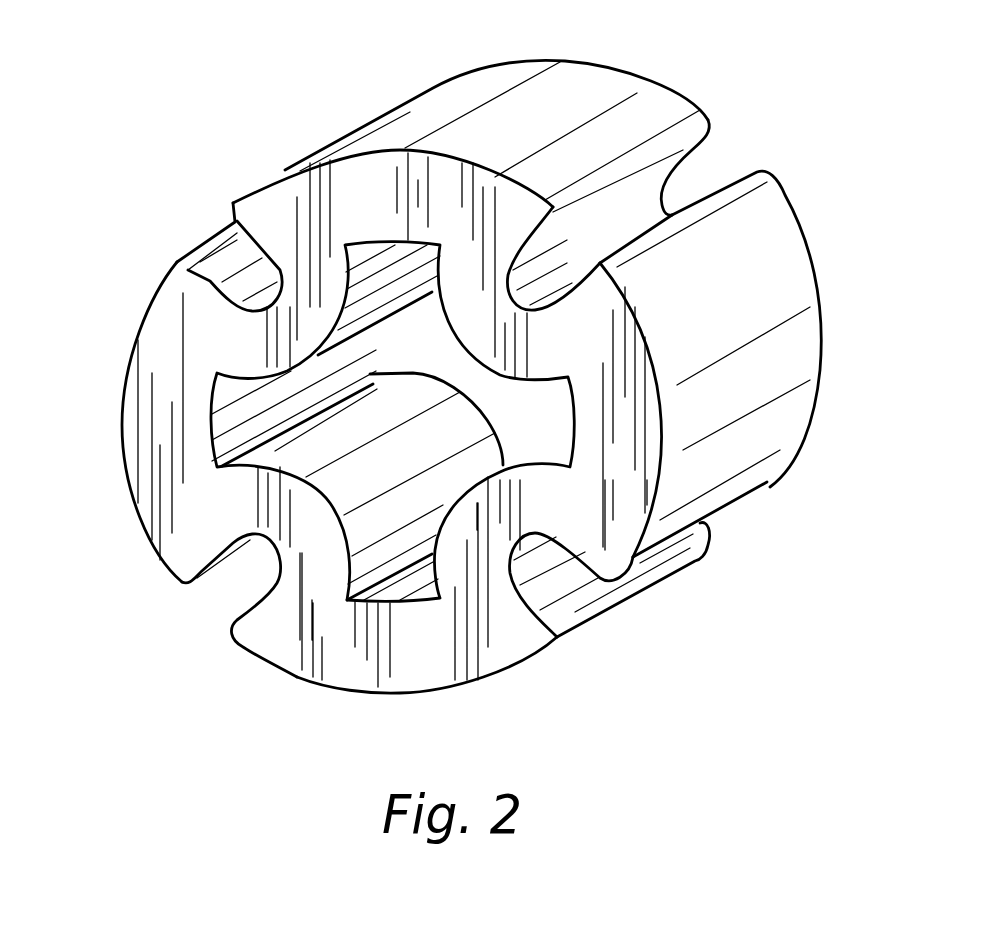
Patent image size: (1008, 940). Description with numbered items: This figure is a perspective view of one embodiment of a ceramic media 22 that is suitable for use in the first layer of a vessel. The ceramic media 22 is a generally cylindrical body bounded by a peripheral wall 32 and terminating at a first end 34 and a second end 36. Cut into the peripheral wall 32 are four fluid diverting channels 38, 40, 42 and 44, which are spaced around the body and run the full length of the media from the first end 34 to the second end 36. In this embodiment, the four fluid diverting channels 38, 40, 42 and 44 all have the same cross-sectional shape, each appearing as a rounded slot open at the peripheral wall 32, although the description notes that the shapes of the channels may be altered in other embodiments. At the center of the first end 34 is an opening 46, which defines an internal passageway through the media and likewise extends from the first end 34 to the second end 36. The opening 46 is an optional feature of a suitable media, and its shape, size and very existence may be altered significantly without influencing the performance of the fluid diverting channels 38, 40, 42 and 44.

The ceramic media 22 is at (308, 85).
The peripheral wall 32 is at (740, 290).
The first end 34 is at (347, 653).
The second end 36 is at (808, 417).
The fluid diverting channel 38 is at (232, 257).
The fluid diverting channel 40 is at (710, 168).
The fluid diverting channel 42 is at (563, 587).
The fluid diverting channel 44 is at (230, 583).
The opening 46 is at (365, 423).